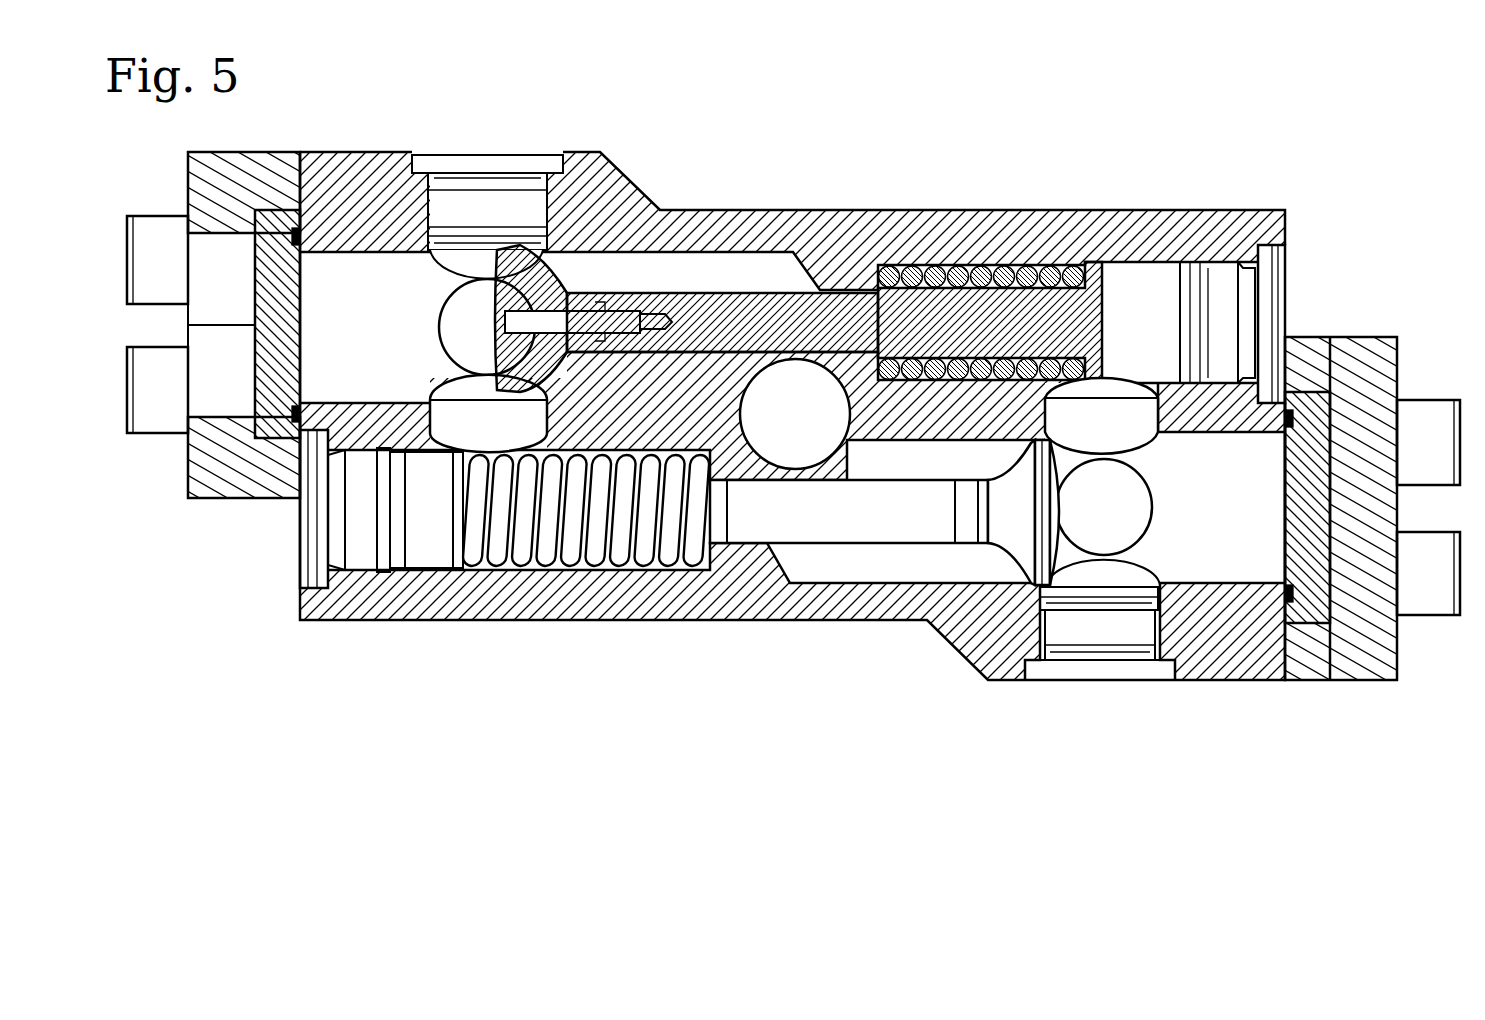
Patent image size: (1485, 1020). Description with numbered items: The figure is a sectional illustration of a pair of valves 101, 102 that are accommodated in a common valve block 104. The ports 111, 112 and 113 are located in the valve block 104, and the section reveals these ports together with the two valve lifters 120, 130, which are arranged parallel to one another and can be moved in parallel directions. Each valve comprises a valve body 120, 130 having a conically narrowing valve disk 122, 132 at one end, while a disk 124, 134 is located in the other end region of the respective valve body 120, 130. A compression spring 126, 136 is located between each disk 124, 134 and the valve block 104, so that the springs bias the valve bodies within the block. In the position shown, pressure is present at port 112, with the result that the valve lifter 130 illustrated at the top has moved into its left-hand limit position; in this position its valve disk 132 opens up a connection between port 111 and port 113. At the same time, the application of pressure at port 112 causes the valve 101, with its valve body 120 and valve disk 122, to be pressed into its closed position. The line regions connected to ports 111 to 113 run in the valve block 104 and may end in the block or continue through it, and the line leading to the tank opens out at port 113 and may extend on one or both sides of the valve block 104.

The valve 101 is at (920, 570).
The valve 102 is at (885, 232).
The valve block 104 is at (1270, 222).
The port 111 is at (453, 332).
The port 112 is at (1140, 507).
The port 113 is at (816, 428).
The valve body 120 is at (820, 530).
The valve disk 122 is at (1022, 476).
The disk 124 is at (453, 516).
The compression spring 126 is at (587, 566).
The valve body 130 is at (743, 292).
The valve disk 132 is at (510, 248).
The disk 134 is at (1100, 276).
The compression spring 136 is at (985, 268).